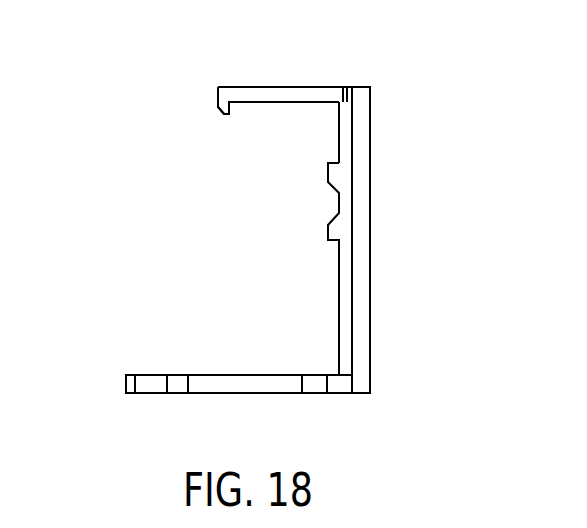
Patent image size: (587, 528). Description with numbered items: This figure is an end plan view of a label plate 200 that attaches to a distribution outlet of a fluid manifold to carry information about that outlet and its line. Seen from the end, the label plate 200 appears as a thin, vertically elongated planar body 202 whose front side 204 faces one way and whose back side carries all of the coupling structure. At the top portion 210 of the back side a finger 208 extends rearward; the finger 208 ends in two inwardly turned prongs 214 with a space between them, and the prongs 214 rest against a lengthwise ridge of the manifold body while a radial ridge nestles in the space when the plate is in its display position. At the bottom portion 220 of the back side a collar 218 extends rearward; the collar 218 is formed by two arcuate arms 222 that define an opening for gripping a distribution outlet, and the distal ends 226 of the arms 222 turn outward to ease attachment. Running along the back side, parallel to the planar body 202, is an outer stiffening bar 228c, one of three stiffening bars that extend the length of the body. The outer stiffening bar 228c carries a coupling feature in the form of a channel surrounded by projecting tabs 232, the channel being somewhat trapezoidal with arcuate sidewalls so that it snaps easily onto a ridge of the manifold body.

The label plate 200 is at (245, 73).
The planar body 202 is at (360, 324).
The front side 204 is at (370, 253).
The finger 208 is at (268, 92).
The top portion 210 is at (359, 92).
The prongs 214 is at (222, 113).
The collar 218 is at (148, 387).
The bottom portion 220 is at (362, 385).
The arcuate arms 222 is at (245, 385).
The distal ends 226 is at (130, 385).
The outer stiffening bar 228c is at (343, 137).
The projecting tabs 232 is at (340, 177).